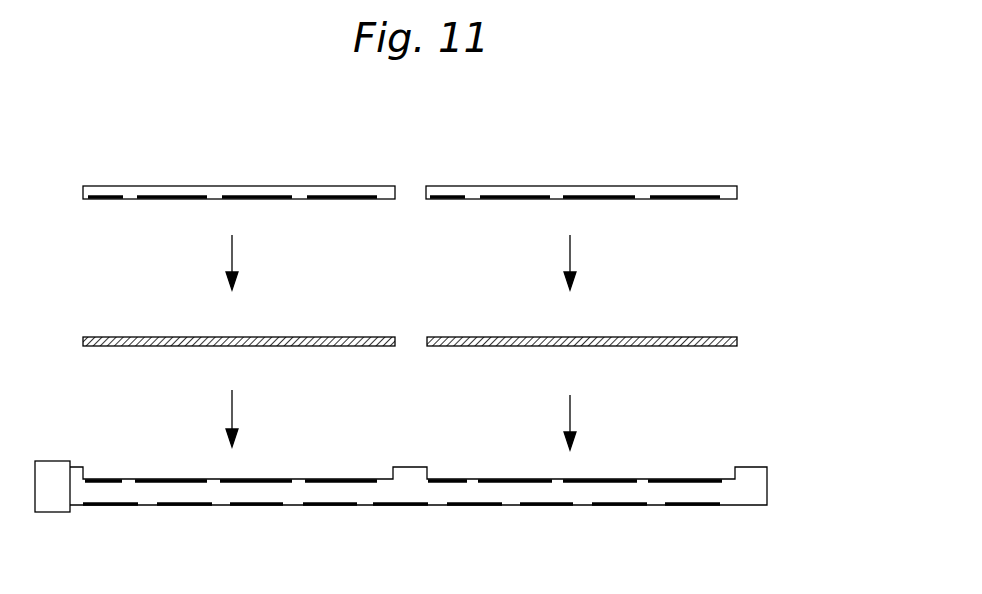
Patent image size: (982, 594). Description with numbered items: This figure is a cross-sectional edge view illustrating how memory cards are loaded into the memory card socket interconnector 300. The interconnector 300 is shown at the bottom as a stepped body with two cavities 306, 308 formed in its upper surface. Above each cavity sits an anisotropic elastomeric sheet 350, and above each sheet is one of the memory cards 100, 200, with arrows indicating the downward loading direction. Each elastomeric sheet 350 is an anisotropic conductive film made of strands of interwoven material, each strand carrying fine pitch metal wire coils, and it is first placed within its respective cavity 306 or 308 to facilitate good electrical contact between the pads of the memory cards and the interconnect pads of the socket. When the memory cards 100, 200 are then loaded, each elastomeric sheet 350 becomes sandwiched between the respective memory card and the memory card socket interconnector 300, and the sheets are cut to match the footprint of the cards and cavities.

The memory card 100 is at (303, 186).
The memory card 200 is at (592, 186).
The anisotropic elastomeric sheet 350 is at (285, 337).
The memory card socket interconnector 300 is at (748, 467).
The cavity 306 is at (300, 479).
The cavity 308 is at (638, 479).